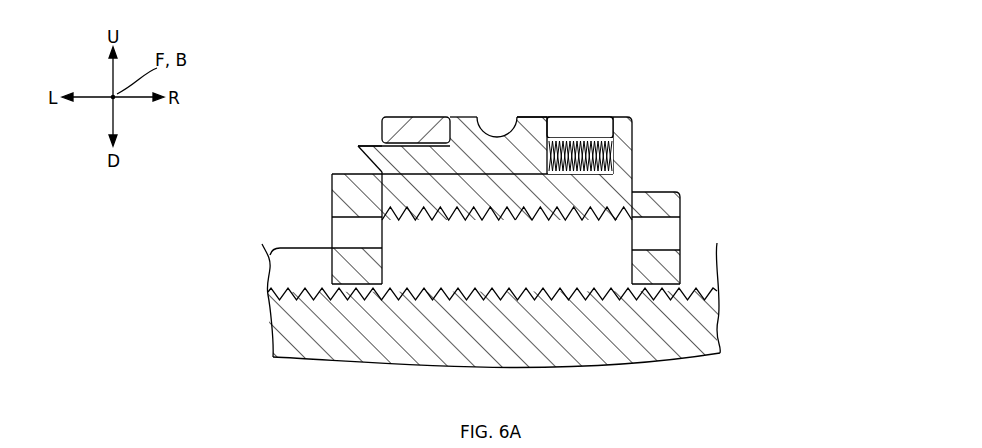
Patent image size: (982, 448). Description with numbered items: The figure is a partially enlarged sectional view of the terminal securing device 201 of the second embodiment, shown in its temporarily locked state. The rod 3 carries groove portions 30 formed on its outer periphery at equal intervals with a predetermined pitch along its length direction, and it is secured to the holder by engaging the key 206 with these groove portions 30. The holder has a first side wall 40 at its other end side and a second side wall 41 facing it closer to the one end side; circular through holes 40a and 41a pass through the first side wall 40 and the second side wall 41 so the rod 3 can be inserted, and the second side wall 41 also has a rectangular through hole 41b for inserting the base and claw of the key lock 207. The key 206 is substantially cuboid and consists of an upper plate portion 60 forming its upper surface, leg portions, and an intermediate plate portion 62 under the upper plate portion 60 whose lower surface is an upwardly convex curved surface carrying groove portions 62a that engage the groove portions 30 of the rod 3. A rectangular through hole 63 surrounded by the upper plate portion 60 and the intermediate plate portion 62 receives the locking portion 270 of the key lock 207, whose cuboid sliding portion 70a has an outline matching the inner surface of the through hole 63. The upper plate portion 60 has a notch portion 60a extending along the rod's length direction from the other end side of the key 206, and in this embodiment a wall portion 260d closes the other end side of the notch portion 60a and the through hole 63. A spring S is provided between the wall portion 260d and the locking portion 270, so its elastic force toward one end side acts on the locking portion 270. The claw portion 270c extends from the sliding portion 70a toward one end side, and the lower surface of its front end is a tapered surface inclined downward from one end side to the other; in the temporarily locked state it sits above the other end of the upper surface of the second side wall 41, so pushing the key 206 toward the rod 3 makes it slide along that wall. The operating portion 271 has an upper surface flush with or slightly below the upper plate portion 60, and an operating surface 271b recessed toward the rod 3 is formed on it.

The terminal securing device 201 is at (552, 209).
The key 206 is at (519, 152).
The key lock 207 is at (420, 95).
The rod 3 is at (697, 353).
The groove portions 30 is at (492, 293).
The first side wall 40 is at (680, 193).
The through hole 40a is at (688, 288).
The second side wall 41 is at (338, 175).
The through hole 41a is at (322, 287).
The through hole 41b is at (332, 236).
The upper plate portion 60 is at (400, 120).
The notch portion 60a is at (600, 127).
The intermediate plate portion 62 is at (598, 190).
The groove portions 62a is at (430, 220).
The through hole 63 is at (376, 145).
The locking portion 270 is at (420, 105).
The claw portion 270c is at (365, 146).
The sliding portion 70a is at (520, 177).
The operating portion 271 is at (537, 117).
The operating surface 271b is at (490, 117).
The wall portion 260d is at (617, 130).
The spring S is at (617, 148).